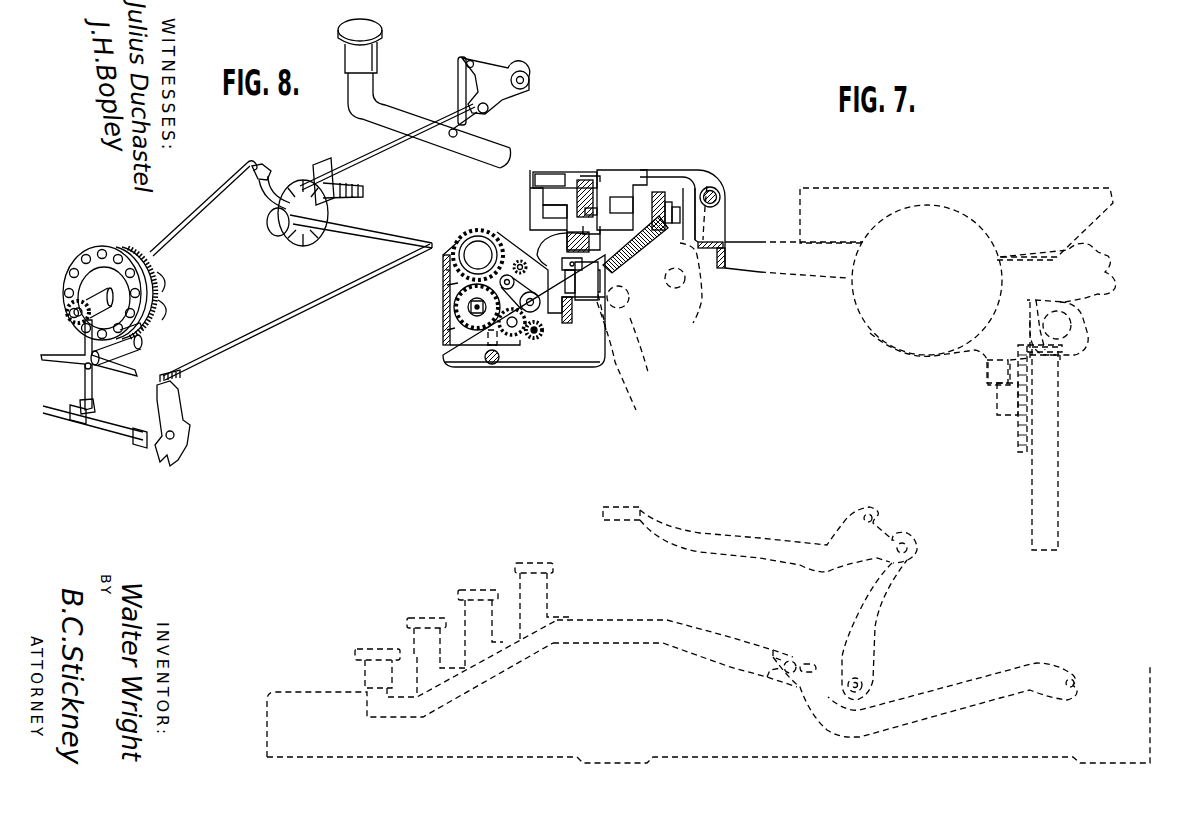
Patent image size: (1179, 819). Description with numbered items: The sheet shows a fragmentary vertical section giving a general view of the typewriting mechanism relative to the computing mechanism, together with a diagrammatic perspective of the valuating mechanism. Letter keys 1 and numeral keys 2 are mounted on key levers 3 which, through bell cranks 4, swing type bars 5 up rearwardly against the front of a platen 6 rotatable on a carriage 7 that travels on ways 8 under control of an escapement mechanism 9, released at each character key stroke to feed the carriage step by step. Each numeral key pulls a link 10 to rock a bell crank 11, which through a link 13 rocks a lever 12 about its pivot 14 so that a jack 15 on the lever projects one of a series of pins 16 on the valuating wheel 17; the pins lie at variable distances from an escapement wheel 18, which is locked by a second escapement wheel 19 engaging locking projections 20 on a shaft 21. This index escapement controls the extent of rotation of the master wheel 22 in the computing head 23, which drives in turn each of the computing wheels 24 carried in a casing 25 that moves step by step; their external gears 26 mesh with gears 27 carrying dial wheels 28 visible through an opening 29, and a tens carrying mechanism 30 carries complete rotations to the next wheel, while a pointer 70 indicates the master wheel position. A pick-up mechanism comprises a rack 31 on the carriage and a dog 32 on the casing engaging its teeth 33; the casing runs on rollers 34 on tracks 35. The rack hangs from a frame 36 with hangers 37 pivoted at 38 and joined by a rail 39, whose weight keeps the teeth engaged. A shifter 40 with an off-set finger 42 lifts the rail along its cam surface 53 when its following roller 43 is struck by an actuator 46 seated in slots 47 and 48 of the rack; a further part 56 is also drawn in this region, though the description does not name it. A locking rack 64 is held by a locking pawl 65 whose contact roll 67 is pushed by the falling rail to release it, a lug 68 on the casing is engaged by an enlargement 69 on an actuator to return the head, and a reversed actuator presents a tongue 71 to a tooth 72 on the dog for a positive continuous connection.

In FIG. 7, the letter keys 1 is at (460, 593).
In FIG. 8, the numeral keys 2 is at (381, 28).
In FIG. 7, the numeral keys 2 is at (528, 563).
In FIG. 8, the key levers 3 is at (429, 120).
In FIG. 7, the key levers 3 is at (684, 653).
In FIG. 7, the bell cranks 4 is at (874, 630).
In FIG. 7, the type bars 5 is at (760, 539).
In FIG. 7, the platen 6 is at (876, 332).
In FIG. 7, the carriage 7 is at (793, 260).
In FIG. 7, the ways 8 is at (1072, 325).
In FIG. 7, the escapement mechanism 9 is at (1017, 412).
In FIG. 8, the link 10 is at (458, 88).
In FIG. 8, the bell crank 11 is at (489, 97).
In FIG. 8, the lever 12 is at (266, 196).
In FIG. 8, the link 13 is at (400, 140).
In FIG. 8, the pivot 14 is at (271, 171).
In FIG. 8, the jack 15 is at (209, 208).
In FIG. 8, the pins 16 is at (154, 282).
In FIG. 8, the valuating wheel 17 is at (80, 269).
In FIG. 8, the escapement wheel 18 is at (141, 344).
In FIG. 8, the second escapement wheel 19 is at (104, 372).
In FIG. 8, the locking projections 20 is at (80, 405).
In FIG. 8, the shaft 21 is at (109, 435).
In FIG. 7, the master wheel 22 is at (458, 301).
In FIG. 7, the computing head 23 is at (522, 286).
In FIG. 7, the computing wheels 24 is at (456, 310).
In FIG. 7, the casing 25 is at (447, 330).
In FIG. 7, the external gears 26 is at (475, 340).
In FIG. 7, the gears 27 is at (446, 270).
In FIG. 7, the dial wheels 28 is at (447, 285).
In FIG. 7, the opening 29 is at (468, 236).
In FIG. 7, the tens carrying mechanism 30 is at (522, 334).
In FIG. 7, the rack 31 is at (587, 182).
In FIG. 7, the dog 32 is at (550, 208).
In FIG. 7, the teeth 33 is at (592, 214).
In FIG. 7, the rollers 34 is at (487, 352).
In FIG. 7, the tracks 35 is at (494, 364).
In FIG. 7, the frame 36 is at (682, 215).
In FIG. 7, the hangers 37 is at (545, 192).
In FIG. 7, the pivot 38 is at (721, 197).
In FIG. 7, the rail 39 is at (567, 247).
In FIG. 7, the shifter 40 is at (598, 241).
In FIG. 7, the off-set finger 42 is at (592, 275).
In FIG. 7, the following roller 43 is at (626, 205).
In FIG. 7, the actuator 46 is at (575, 172).
In FIG. 7, the slots 47 is at (570, 172).
In FIG. 7, the slots 48 is at (622, 178).
In FIG. 7, the cam surface 53 is at (624, 270).
In FIG. 7, the post 56 is at (658, 192).
In FIG. 7, the locking rack 64 is at (563, 310).
In FIG. 7, the locking pawl 65 is at (565, 285).
In FIG. 7, the contact roll 67 is at (562, 265).
In FIG. 7, the lug 68 is at (537, 235).
In FIG. 7, the enlargement 69 is at (538, 221).
In FIG. 7, the pointer 70 is at (443, 258).
In FIG. 7, the tongue 71 is at (585, 178).
In FIG. 7, the tooth 72 is at (591, 233).